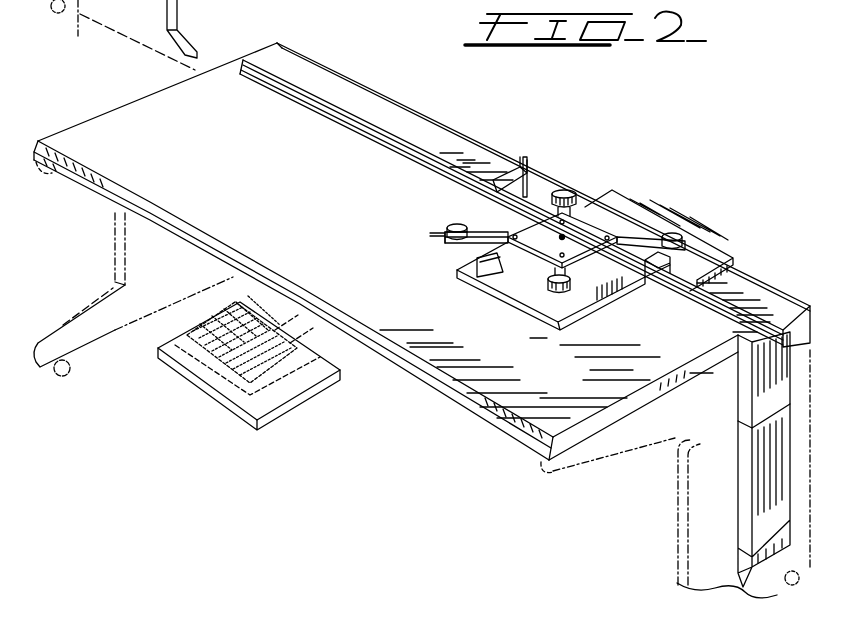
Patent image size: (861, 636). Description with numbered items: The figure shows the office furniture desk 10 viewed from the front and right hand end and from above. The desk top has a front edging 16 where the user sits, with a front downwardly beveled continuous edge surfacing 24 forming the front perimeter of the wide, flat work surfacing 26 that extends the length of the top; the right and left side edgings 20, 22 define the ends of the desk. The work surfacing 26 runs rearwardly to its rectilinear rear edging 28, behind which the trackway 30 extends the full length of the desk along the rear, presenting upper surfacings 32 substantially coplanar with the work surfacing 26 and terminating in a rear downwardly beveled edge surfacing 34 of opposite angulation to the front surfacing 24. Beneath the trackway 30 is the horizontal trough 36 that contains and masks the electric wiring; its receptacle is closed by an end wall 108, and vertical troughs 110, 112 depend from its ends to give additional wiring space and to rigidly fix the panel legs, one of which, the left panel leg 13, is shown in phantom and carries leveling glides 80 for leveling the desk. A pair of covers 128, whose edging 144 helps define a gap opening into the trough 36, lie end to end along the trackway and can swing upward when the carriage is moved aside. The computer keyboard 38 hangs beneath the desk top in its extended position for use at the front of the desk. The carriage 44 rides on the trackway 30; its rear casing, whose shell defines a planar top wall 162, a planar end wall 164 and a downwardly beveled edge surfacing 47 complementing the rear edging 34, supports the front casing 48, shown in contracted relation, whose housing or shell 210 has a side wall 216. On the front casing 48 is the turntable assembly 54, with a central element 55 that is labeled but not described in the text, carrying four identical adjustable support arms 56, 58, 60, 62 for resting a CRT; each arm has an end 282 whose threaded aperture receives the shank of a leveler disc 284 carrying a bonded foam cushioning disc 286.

The office furniture desk 10 is at (567, 240).
The left panel leg 13 is at (137, 1).
The front edging 16 is at (477, 418).
The right side edging 20 is at (647, 404).
The left side edging 22 is at (90, 124).
The front downwardly beveled continuous edge surfacing 24 is at (397, 358).
The work surfacing 26 is at (288, 226).
The rear edging 28 is at (465, 162).
The trackway 30 is at (493, 163).
The upper surfacings 32 is at (262, 52).
The downwardly beveled continuous edge surfacing 34 is at (810, 306).
The horizontal trough 36 is at (733, 384).
The computer keyboard 38 is at (212, 393).
The carriage 44 is at (668, 215).
The downwardly beveled edge surfacing 47 is at (722, 262).
The front casing 48 is at (526, 305).
The turntable assembly 54 is at (578, 208).
The pivot 55 is at (562, 238).
The adjustable support arm 56 is at (564, 190).
The adjustable support arm 58 is at (482, 231).
The adjustable support arm 60 is at (554, 293).
The adjustable support arm 62 is at (648, 249).
The leveling glides 80 is at (55, 16).
The end wall 108 is at (780, 323).
The vertical trough 110 is at (75, 3).
The vertical trough 112 is at (743, 457).
The covers 128 is at (345, 92).
The edging 144 is at (462, 172).
The planar top wall 162 is at (690, 240).
The planar end wall 164 is at (684, 264).
The housing or shell 210 is at (463, 261).
The side wall 216 is at (600, 298).
The arm end 282 is at (447, 248).
The leveler disc 284 is at (450, 239).
The cushioning disc 286 is at (447, 223).